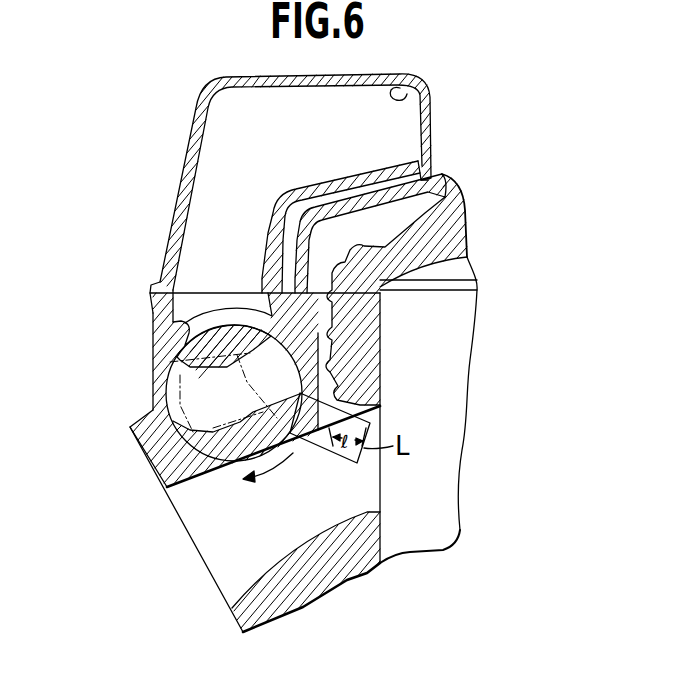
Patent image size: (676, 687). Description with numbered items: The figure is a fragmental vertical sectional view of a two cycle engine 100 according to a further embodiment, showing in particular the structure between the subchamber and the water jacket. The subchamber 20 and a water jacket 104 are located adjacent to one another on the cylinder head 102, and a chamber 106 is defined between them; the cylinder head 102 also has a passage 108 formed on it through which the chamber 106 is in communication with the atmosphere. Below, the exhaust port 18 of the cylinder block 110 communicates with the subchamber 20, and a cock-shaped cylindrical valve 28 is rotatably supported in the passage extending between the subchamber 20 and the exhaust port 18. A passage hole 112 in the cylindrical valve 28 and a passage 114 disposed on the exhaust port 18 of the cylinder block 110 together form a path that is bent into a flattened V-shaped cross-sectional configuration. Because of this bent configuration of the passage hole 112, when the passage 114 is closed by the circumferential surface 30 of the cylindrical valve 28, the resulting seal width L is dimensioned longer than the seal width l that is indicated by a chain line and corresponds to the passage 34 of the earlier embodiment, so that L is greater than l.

The subchamber 20 is at (408, 93).
The two cycle engine 100 is at (398, 244).
The chamber 106 is at (320, 201).
The passage 108 is at (425, 176).
The water jacket 104 is at (455, 184).
The cylinder head 102 is at (457, 242).
The cylinder block 110 is at (380, 328).
The passage 114 is at (181, 336).
The cylindrical valve 28 is at (187, 390).
The circumferential surface 30 is at (229, 465).
The passage 34 is at (292, 442).
The passage hole 112 is at (140, 450).
The exhaust port 18 is at (167, 485).